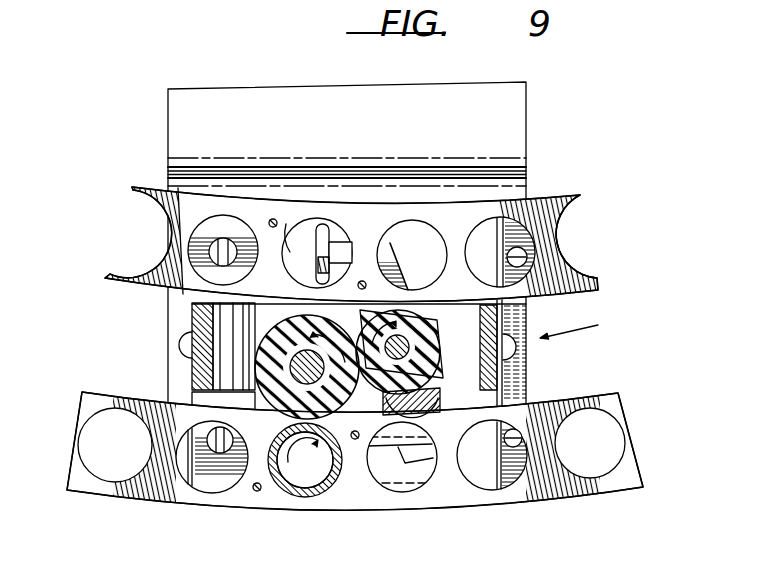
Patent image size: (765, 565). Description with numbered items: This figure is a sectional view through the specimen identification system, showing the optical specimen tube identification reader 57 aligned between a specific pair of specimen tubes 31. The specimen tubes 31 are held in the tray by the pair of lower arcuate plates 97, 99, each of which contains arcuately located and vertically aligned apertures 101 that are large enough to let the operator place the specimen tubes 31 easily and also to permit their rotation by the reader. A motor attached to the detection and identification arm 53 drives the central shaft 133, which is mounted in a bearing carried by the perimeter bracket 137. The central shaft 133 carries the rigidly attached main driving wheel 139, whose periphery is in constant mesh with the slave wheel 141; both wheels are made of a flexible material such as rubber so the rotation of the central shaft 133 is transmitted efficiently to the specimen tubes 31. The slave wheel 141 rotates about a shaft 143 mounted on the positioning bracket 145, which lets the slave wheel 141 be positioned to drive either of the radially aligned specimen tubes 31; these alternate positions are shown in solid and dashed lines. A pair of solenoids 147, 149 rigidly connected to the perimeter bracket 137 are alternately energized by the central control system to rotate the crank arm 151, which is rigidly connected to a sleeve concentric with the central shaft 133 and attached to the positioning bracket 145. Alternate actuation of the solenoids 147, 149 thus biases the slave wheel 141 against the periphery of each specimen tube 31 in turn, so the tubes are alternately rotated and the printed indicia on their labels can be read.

The detection and identification arm 53 is at (518, 131).
The lower arcuate plate 97 is at (553, 196).
The lower arcuate plate 99 is at (447, 497).
The apertures 101 is at (535, 266).
The optical specimen tube identification reader 57 is at (581, 327).
The perimeter bracket 137 is at (200, 320).
The slave wheel 141 is at (252, 346).
The shaft 143 is at (289, 318).
The central shaft 133 is at (402, 334).
The main driving wheel 139 is at (431, 385).
The positioning bracket 145 is at (405, 411).
The solenoid 147 is at (313, 467).
The solenoid 149 is at (306, 241).
The crank arm 151 is at (392, 243).
The specimen tubes 31 is at (287, 487).